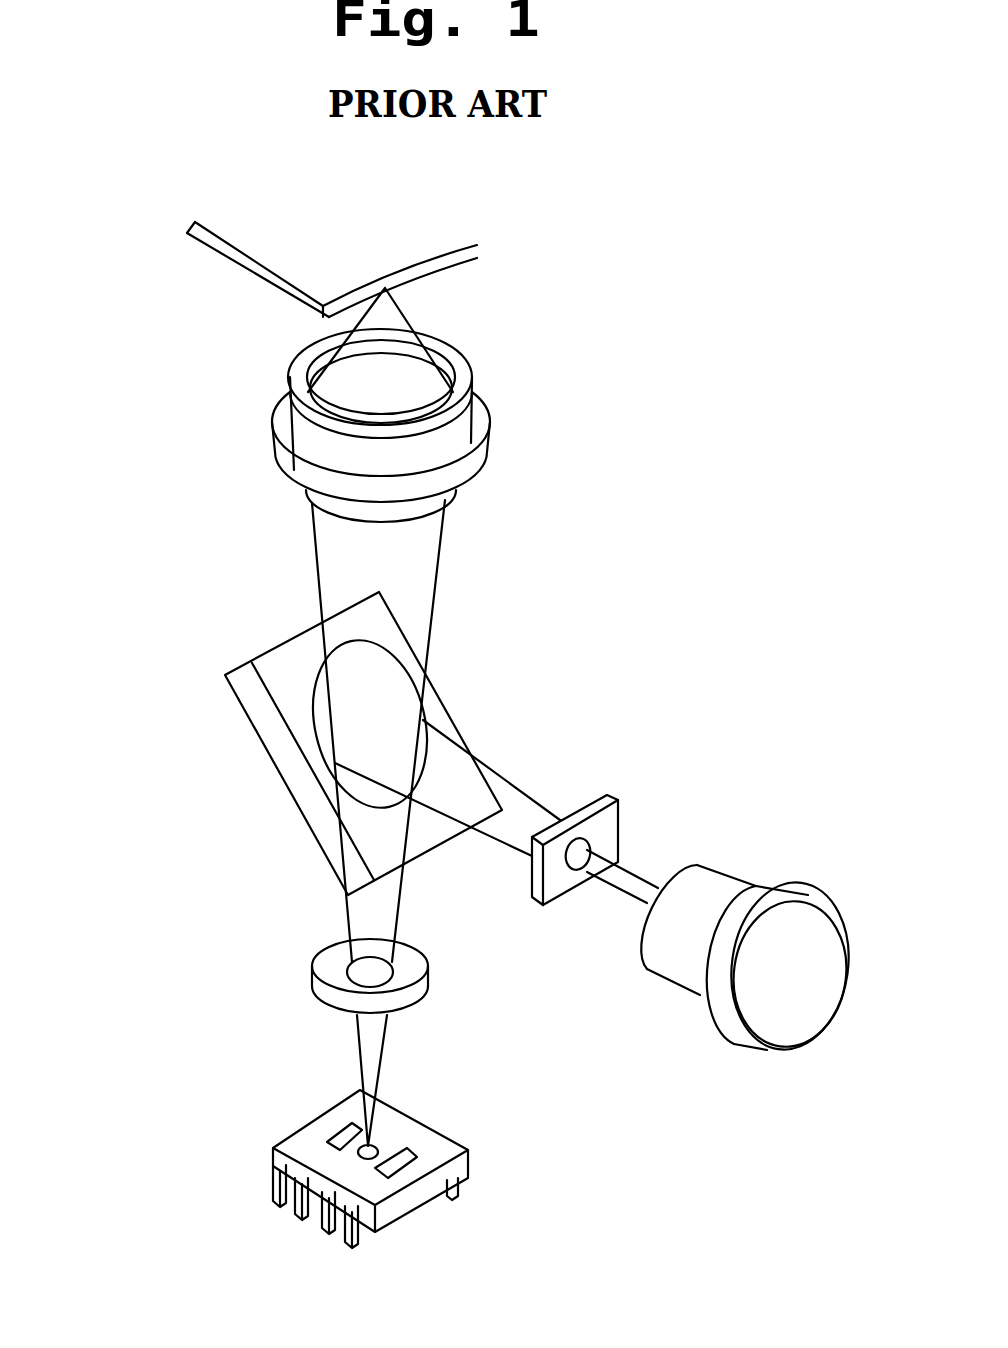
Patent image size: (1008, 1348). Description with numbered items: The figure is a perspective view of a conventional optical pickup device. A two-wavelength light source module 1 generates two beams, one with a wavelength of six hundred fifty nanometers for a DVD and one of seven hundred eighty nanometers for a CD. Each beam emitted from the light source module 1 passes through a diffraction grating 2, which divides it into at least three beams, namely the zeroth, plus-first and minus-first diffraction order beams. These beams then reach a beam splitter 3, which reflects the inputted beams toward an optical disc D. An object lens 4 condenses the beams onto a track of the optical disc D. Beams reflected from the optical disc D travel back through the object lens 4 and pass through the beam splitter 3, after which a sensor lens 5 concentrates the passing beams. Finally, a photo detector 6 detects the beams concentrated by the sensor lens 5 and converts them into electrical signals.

The two-wavelength light source module 1 is at (717, 873).
The diffraction grating 2 is at (618, 806).
The beam splitter 3 is at (448, 707).
The object lens 4 is at (453, 431).
The sensor lens 5 is at (328, 975).
The photo detector 6 is at (413, 1208).
The optical disc D is at (222, 226).